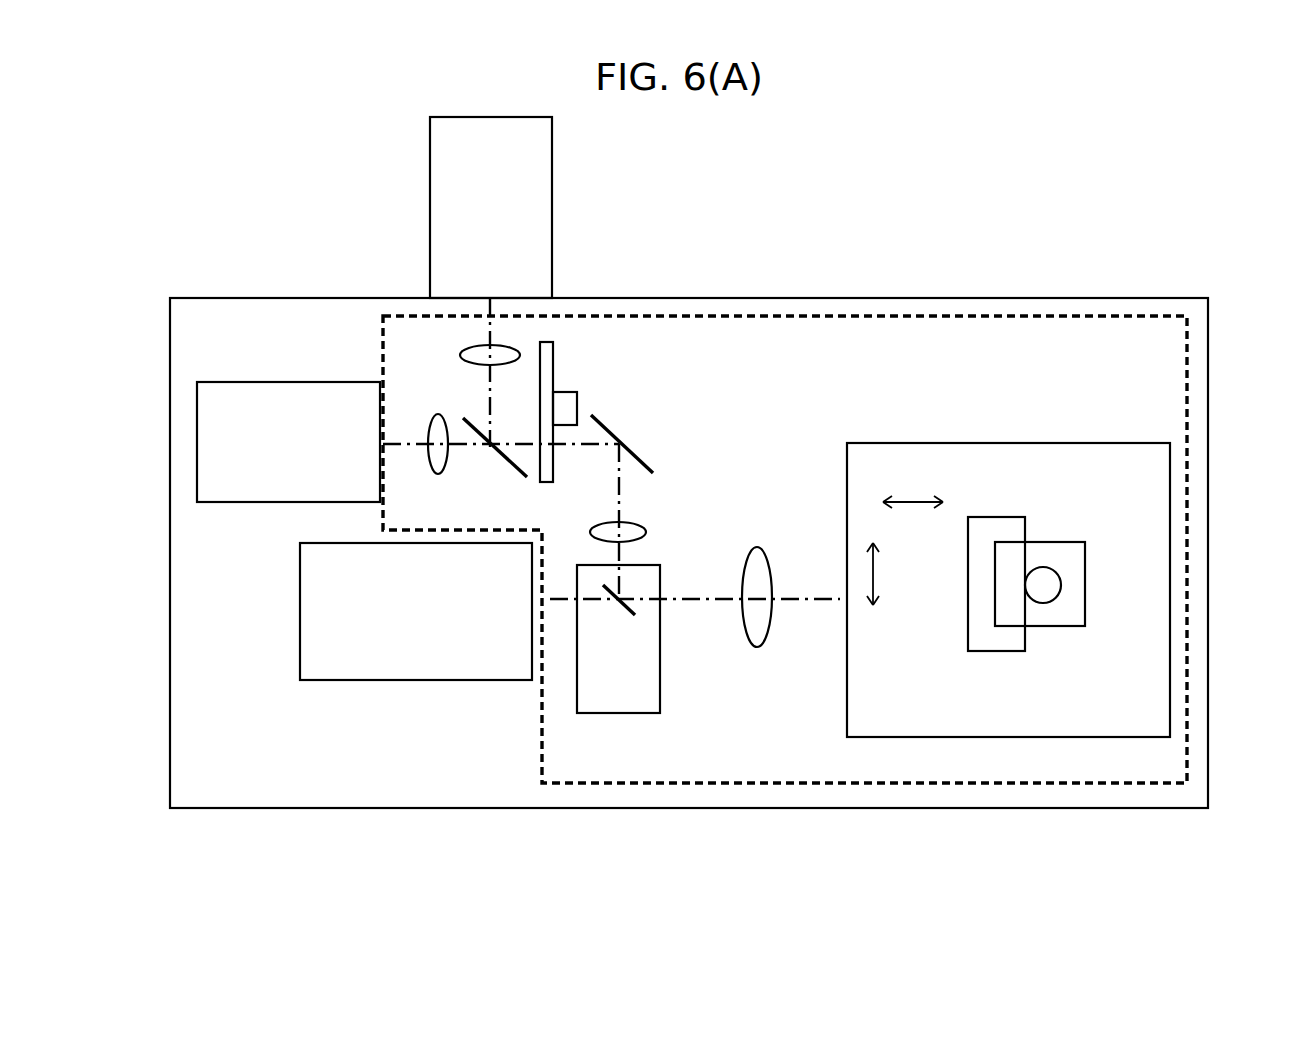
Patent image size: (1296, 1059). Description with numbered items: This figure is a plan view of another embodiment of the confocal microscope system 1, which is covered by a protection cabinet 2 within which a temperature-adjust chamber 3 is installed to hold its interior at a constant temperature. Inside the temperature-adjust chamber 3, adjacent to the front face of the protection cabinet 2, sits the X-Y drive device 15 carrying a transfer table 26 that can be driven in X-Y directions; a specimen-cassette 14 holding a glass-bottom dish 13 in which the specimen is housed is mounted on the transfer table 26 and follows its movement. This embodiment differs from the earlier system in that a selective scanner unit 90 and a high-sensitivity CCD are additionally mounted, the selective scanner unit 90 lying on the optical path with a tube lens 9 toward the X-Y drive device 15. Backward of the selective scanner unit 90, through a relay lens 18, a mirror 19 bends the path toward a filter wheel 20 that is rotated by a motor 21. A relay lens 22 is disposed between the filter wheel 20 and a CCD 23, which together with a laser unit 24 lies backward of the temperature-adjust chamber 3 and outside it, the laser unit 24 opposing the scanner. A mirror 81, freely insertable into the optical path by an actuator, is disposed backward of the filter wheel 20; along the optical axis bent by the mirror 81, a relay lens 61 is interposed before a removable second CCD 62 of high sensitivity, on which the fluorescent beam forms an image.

The confocal microscope system 1 is at (692, 276).
The protection cabinet 2 is at (790, 298).
The temperature-adjust chamber 3 is at (990, 260).
The tube lens 9 is at (760, 648).
The glass-bottom dish 13 is at (1062, 590).
The specimen-cassette 14 is at (1058, 541).
The X-Y drive device 15 is at (1020, 443).
The relay lens 18 is at (646, 532).
The mirror 19 is at (650, 470).
The filter wheel 20 is at (553, 362).
The motor 21 is at (577, 396).
The relay lens 22 is at (438, 415).
The CCD 23 is at (280, 382).
The laser unit 24 is at (360, 680).
The transfer table 26 is at (990, 651).
The relay lens 61 is at (473, 348).
The second CCD 62 is at (427, 204).
The mirror 81 is at (500, 458).
The selective scanner unit 90 is at (618, 713).